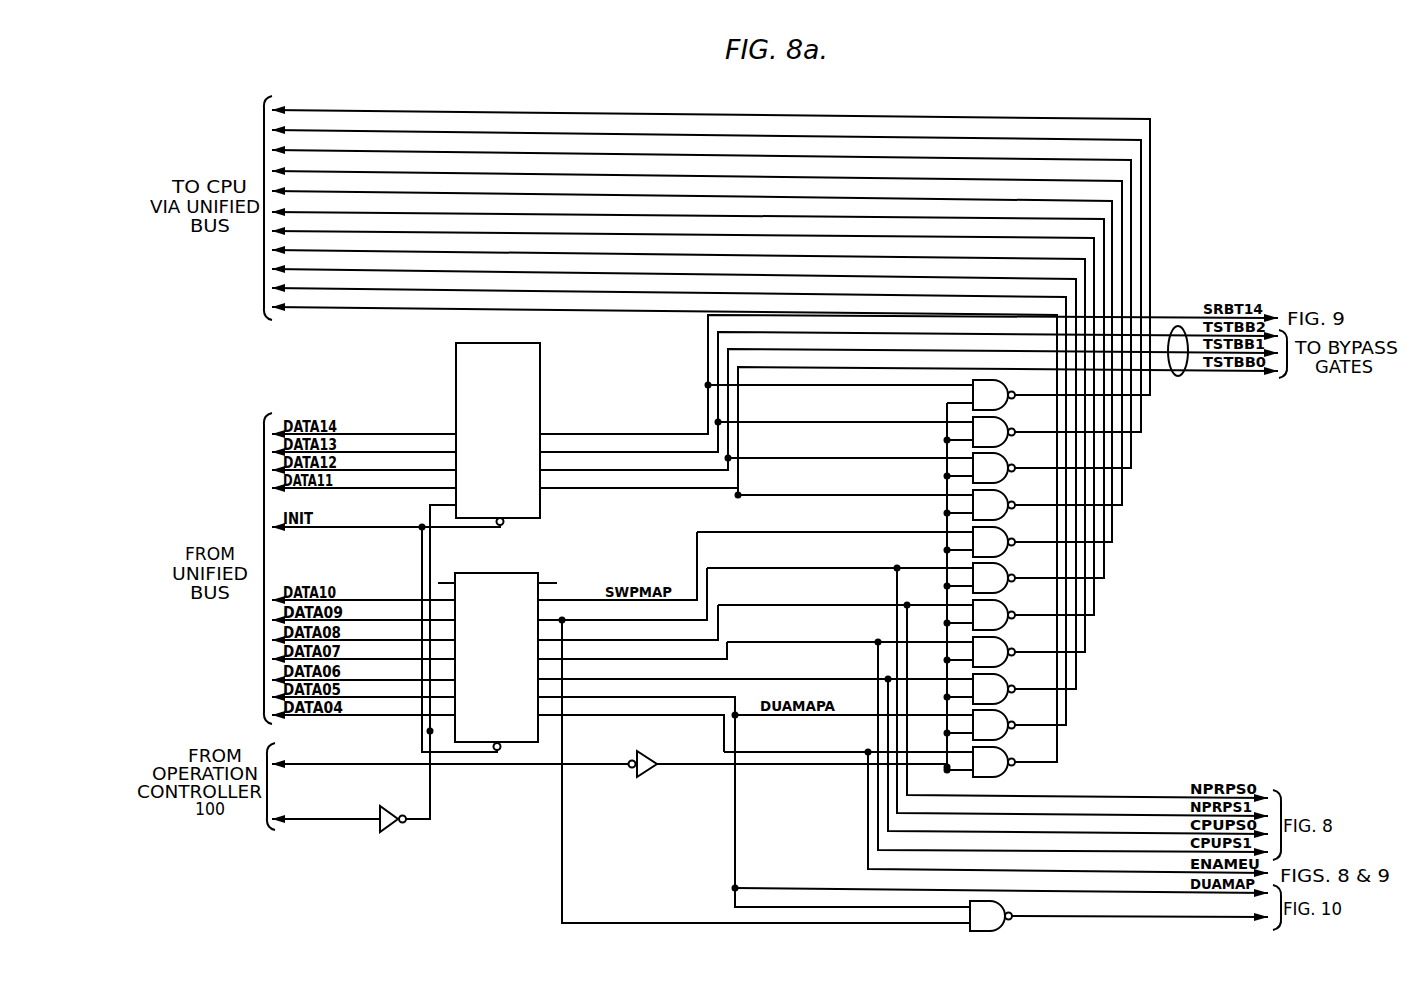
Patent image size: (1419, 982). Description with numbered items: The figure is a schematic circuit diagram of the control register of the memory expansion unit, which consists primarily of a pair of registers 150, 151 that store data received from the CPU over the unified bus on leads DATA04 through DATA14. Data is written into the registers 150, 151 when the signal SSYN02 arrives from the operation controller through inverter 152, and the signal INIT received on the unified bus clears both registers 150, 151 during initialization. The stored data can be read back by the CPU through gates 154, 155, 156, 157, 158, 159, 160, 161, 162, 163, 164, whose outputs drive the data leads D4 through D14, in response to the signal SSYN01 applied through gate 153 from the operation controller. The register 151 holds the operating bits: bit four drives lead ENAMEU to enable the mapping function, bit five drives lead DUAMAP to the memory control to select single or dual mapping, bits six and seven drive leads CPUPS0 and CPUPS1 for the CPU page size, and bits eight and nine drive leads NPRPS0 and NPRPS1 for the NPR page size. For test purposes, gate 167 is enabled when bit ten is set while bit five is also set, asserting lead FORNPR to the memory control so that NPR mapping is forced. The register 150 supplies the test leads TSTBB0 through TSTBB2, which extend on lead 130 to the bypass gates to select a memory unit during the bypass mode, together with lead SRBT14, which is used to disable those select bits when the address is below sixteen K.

The lead 130 is at (1178, 376).
The register 150 is at (541, 511).
The register 151 is at (514, 746).
The inverter 152 is at (392, 827).
The gate 153 is at (648, 752).
The gate 154 is at (1003, 381).
The gate 155 is at (1003, 418).
The gate 156 is at (1003, 454).
The gate 157 is at (1003, 491).
The gate 158 is at (1003, 528).
The gate 159 is at (1003, 564).
The gate 160 is at (1003, 601).
The gate 161 is at (1003, 638).
The gate 162 is at (1003, 675).
The gate 163 is at (1003, 711).
The gate 164 is at (1003, 748).
The gate 167 is at (997, 932).